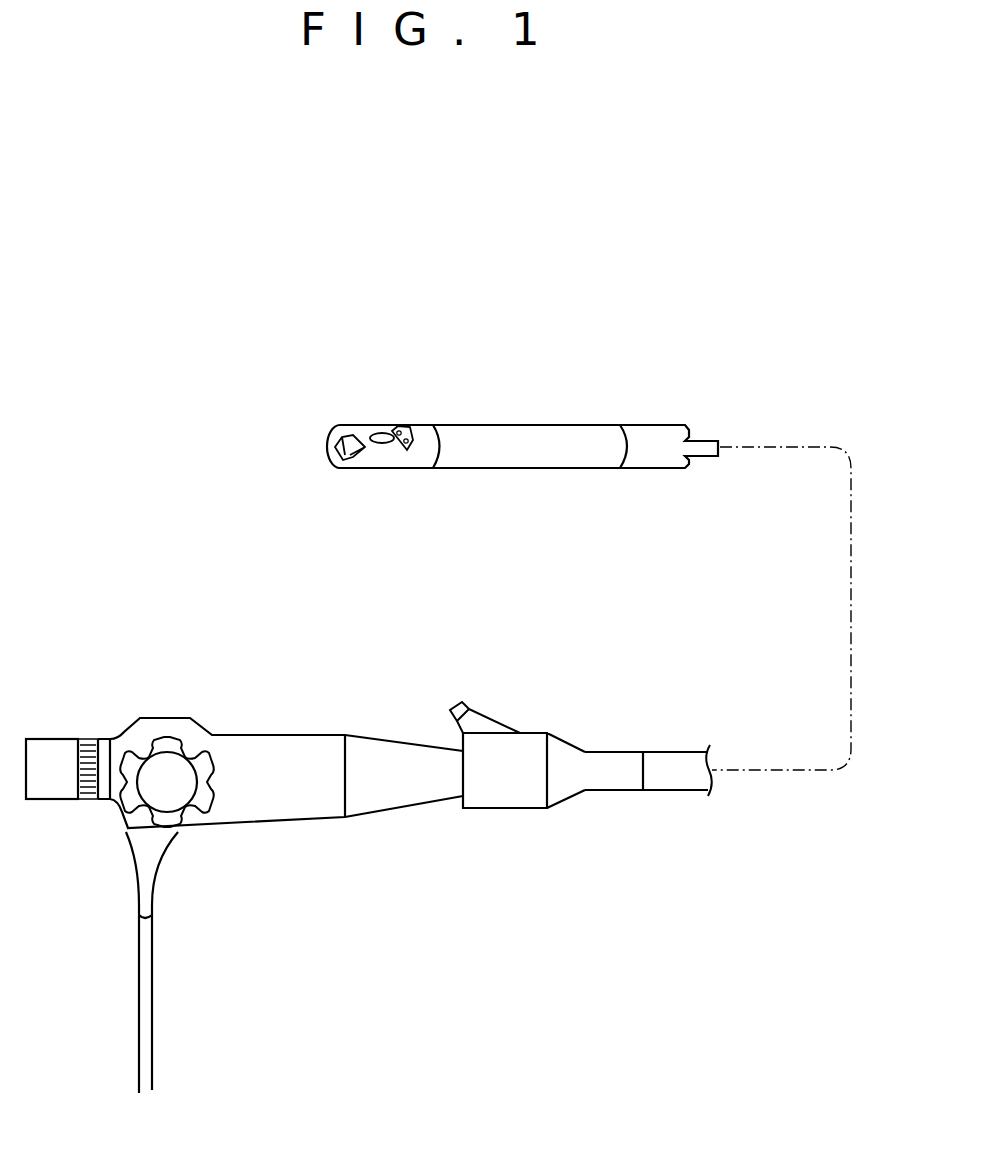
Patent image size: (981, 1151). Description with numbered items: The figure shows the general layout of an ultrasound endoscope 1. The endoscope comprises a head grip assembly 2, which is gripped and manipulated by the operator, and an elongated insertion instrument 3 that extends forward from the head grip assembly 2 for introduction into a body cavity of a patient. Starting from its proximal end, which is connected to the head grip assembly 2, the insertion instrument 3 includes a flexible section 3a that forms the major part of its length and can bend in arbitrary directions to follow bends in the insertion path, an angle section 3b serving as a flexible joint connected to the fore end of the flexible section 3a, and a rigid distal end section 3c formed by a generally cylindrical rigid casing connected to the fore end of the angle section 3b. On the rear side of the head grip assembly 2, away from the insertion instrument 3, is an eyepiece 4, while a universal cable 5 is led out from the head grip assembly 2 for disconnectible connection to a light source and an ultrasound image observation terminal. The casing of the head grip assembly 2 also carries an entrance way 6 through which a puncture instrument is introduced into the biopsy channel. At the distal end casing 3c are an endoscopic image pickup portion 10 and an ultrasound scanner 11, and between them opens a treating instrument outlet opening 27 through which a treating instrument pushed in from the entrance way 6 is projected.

The ultrasound endoscope 1 is at (207, 393).
The head grip assembly 2 is at (314, 783).
The insertion instrument 3 is at (652, 408).
The flexible section 3a is at (688, 778).
The angle section 3b is at (528, 430).
The rigid distal end section 3c is at (390, 470).
The eyepiece 4 is at (65, 765).
The universal cable 5 is at (150, 1018).
The entrance way 6 is at (483, 710).
The endoscopic image pickup portion 10 is at (395, 428).
The ultrasound scanner 11 is at (333, 435).
The treating instrument outlet opening 27 is at (370, 435).